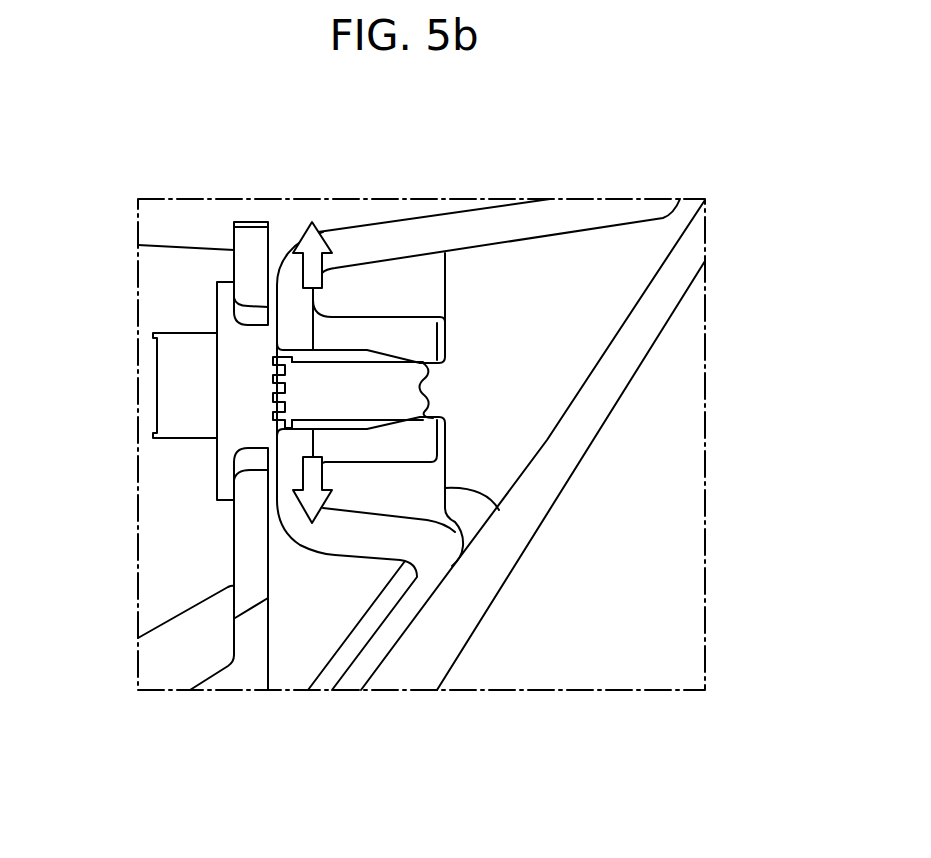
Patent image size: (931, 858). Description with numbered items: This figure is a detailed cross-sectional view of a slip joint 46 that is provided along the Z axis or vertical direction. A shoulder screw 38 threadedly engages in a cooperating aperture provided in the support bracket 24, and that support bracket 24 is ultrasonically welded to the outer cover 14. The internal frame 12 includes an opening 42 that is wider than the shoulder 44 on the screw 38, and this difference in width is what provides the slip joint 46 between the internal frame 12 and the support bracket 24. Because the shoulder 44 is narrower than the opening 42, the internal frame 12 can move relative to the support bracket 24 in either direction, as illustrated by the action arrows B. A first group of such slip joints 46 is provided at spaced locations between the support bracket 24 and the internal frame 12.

The internal frame 12 is at (247, 538).
The outer cover 14 is at (600, 388).
The support bracket 24 is at (488, 237).
The shoulder screw 38 is at (177, 393).
The opening 42 is at (248, 313).
The shoulder 44 is at (248, 367).
The slip joint 46 is at (285, 545).
The action arrows B is at (324, 243).